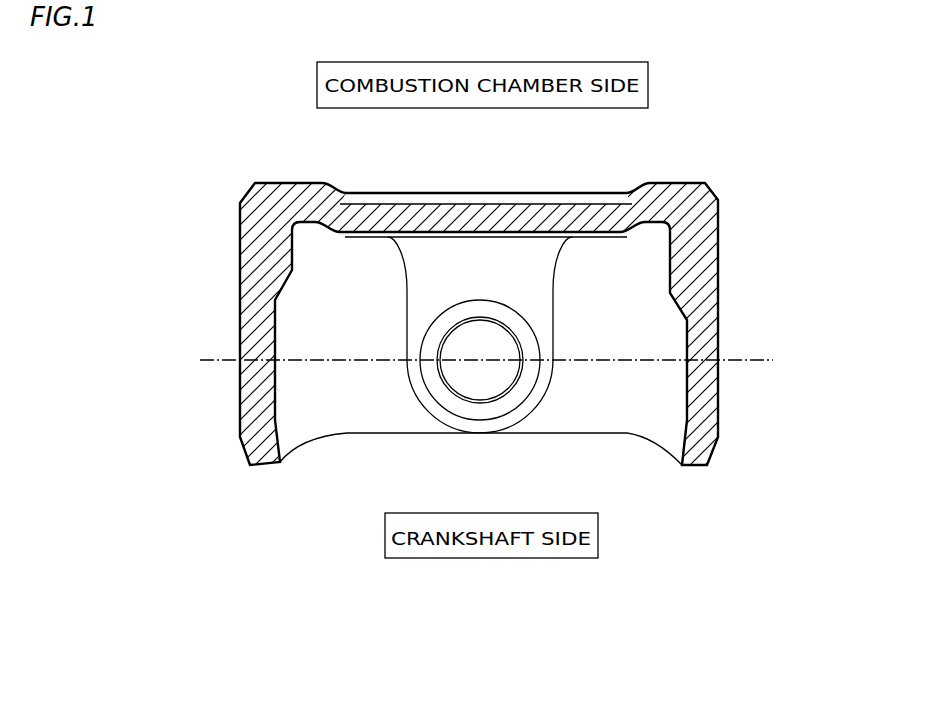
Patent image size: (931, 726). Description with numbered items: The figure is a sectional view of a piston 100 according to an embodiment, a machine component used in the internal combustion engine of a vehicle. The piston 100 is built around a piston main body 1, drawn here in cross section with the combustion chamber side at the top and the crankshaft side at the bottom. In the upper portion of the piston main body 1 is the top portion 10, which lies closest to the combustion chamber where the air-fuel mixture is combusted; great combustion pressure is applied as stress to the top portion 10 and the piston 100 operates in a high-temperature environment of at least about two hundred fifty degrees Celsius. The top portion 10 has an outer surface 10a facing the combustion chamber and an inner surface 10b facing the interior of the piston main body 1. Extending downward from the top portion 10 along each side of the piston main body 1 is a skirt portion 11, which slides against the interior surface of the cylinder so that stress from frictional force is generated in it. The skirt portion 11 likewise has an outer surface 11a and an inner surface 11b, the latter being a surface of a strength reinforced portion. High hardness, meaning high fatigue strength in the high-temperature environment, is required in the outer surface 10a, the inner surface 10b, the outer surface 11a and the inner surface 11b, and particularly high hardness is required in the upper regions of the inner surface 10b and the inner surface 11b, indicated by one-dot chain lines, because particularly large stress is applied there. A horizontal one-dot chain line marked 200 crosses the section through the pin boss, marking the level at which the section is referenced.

The piston 100 is at (824, 79).
The top portion 10 is at (492, 203).
The outer surface of top portion 10a is at (673, 182).
The inner surface of top portion 10b is at (587, 233).
The skirt portion 11 is at (708, 288).
The outer surface of skirt portion 11a is at (720, 334).
The inner surface of skirt portion 11b is at (688, 332).
The section line 200 is at (209, 364).
The piston main body 1 is at (573, 420).